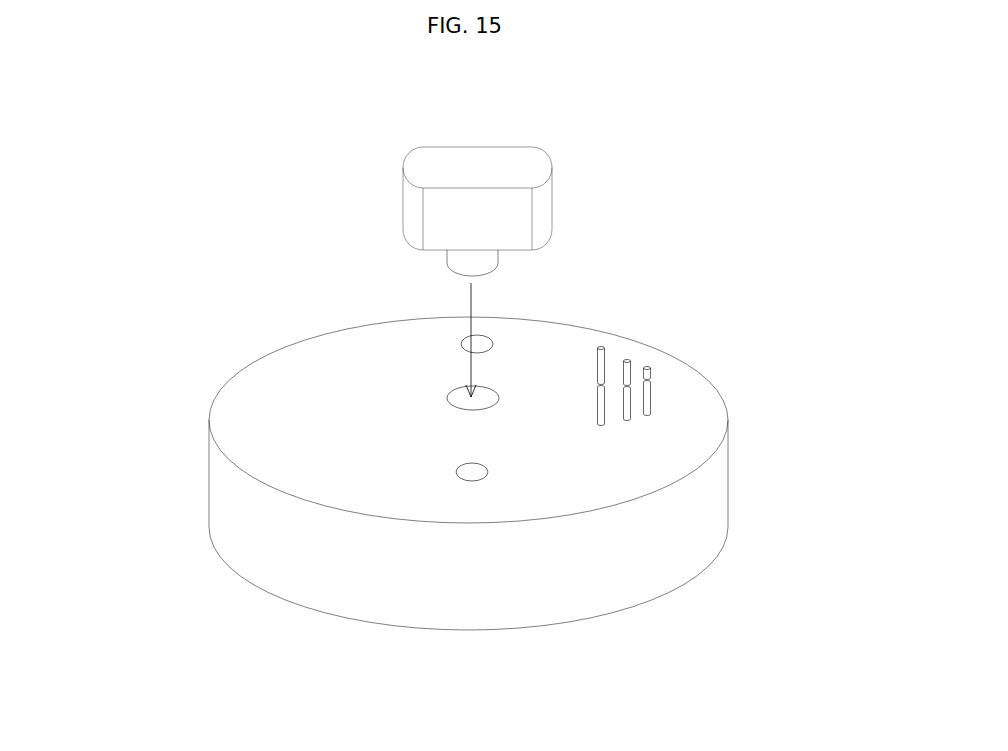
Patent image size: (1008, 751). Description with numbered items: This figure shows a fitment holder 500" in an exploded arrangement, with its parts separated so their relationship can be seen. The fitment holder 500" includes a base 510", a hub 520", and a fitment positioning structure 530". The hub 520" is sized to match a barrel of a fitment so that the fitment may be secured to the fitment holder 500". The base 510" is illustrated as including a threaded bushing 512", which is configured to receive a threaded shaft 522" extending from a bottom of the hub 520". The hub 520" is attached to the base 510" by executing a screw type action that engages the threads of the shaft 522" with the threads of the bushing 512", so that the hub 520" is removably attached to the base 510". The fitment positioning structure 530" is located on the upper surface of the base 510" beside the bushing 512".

The fitment holder 500 is at (165, 333).
The base 510 is at (526, 458).
The threaded bushing 512 is at (449, 394).
The hub 520 is at (458, 272).
The threaded shaft 522 is at (483, 262).
The fitment positioning structure 530 is at (635, 343).